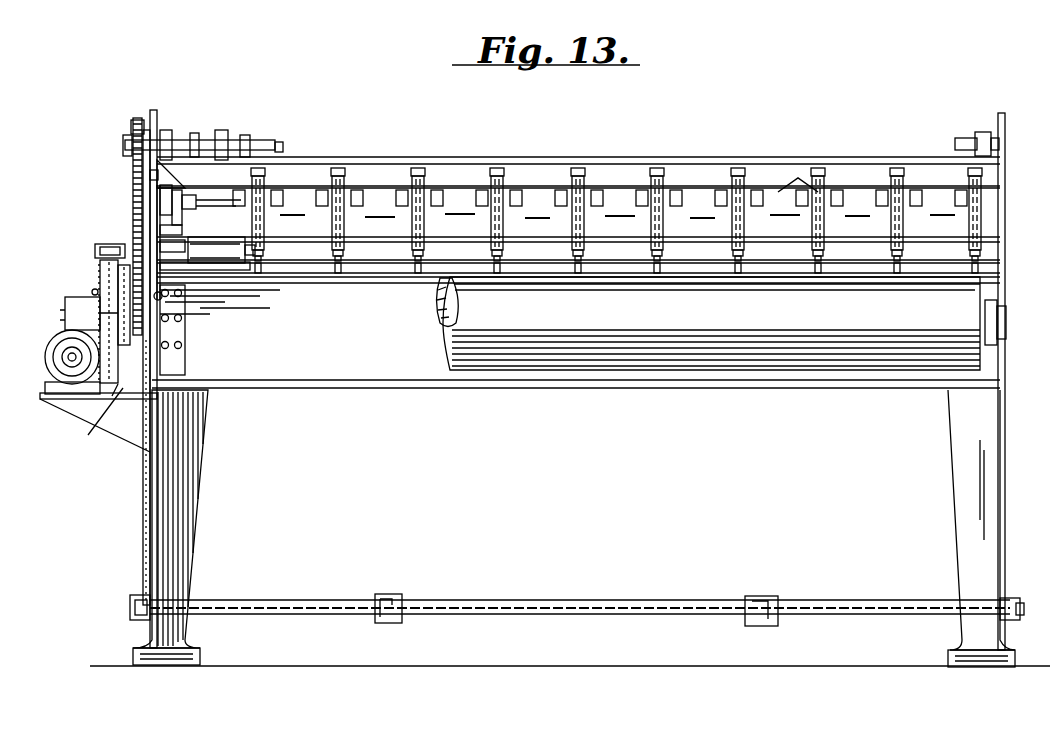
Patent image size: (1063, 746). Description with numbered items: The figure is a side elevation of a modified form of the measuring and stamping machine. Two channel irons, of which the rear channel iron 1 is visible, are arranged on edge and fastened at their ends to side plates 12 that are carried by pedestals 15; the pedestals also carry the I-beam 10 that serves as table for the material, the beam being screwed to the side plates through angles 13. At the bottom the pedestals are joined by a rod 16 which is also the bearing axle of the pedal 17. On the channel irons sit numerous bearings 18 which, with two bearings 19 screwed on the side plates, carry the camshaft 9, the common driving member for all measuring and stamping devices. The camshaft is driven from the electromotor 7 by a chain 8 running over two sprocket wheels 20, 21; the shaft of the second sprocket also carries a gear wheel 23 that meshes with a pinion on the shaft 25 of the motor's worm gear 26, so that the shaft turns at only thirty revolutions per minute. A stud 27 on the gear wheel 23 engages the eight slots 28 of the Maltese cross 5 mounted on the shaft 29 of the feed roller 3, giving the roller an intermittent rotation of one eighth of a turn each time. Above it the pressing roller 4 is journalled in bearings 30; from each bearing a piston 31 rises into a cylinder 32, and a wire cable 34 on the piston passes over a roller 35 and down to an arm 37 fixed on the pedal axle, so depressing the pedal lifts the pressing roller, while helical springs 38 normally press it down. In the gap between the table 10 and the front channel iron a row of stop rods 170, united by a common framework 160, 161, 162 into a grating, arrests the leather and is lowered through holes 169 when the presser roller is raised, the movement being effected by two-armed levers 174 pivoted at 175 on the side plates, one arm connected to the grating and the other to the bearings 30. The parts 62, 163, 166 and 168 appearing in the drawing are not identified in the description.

The channel iron 1 is at (462, 190).
The feed roller 3 is at (705, 370).
The pressing roller 4 is at (220, 268).
The Maltese cross 5 is at (100, 418).
The electromotor 7 is at (60, 360).
The chain 8 is at (150, 175).
The camshaft 9 is at (123, 144).
The I-beam 10 is at (495, 389).
The side plate 12 is at (154, 110).
The angle 13 is at (186, 340).
The pedestal 15 is at (200, 420).
The rod 16 is at (532, 600).
The pedal 17 is at (392, 598).
The bearing 18 is at (226, 130).
The bearing 19 is at (168, 130).
The sprocket wheel 20 is at (131, 125).
The sprocket wheel 21 is at (150, 438).
The gear wheel 23 is at (95, 250).
The shaft 25 is at (65, 315).
The worm gear 26 is at (995, 345).
The stud 27 is at (100, 262).
The slot 28 is at (50, 348).
The shaft 29 is at (157, 190).
The bearing 30 is at (180, 262).
The piston 31 is at (160, 245).
The cylinder 32 is at (172, 205).
The wire cable 34 is at (143, 553).
The roller 35 is at (157, 165).
The arm 37 is at (135, 620).
The helical spring 38 is at (160, 195).
The collar 62 is at (196, 133).
The framework 160 is at (300, 186).
The framework 161 is at (516, 188).
The framework 162 is at (377, 244).
The post 163 is at (418, 168).
The link 166 is at (798, 178).
The post 168 is at (657, 168).
The hole 169 is at (985, 262).
The stop rod 170 is at (982, 203).
The two-armed lever 174 is at (190, 200).
The pivot 175 is at (160, 229).